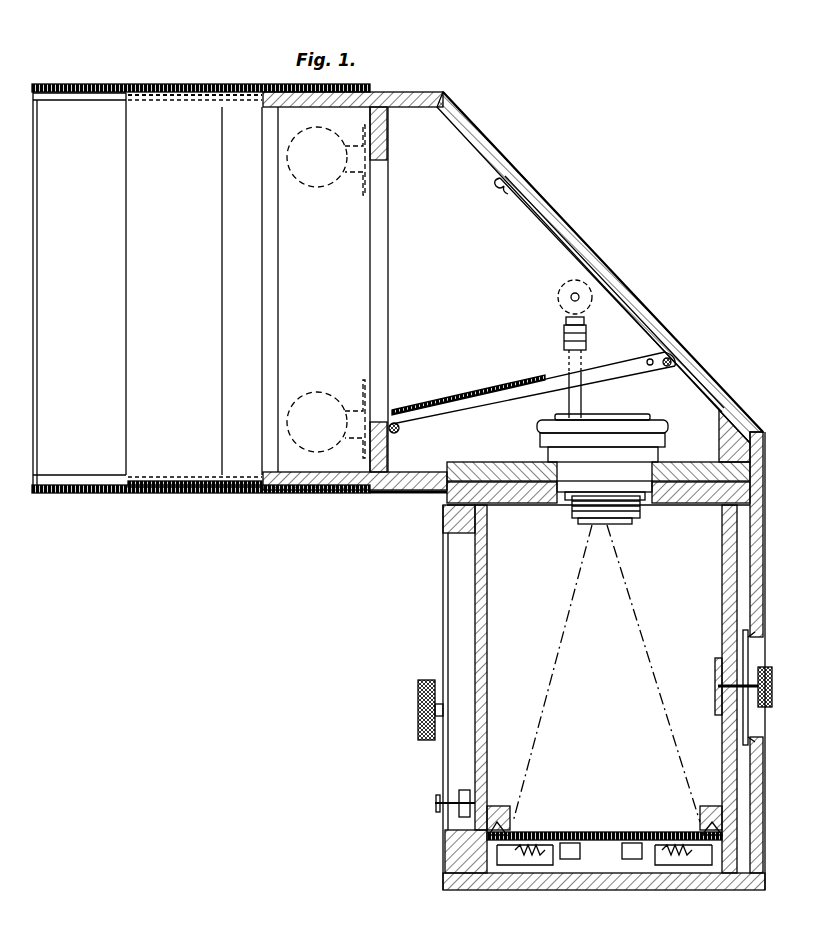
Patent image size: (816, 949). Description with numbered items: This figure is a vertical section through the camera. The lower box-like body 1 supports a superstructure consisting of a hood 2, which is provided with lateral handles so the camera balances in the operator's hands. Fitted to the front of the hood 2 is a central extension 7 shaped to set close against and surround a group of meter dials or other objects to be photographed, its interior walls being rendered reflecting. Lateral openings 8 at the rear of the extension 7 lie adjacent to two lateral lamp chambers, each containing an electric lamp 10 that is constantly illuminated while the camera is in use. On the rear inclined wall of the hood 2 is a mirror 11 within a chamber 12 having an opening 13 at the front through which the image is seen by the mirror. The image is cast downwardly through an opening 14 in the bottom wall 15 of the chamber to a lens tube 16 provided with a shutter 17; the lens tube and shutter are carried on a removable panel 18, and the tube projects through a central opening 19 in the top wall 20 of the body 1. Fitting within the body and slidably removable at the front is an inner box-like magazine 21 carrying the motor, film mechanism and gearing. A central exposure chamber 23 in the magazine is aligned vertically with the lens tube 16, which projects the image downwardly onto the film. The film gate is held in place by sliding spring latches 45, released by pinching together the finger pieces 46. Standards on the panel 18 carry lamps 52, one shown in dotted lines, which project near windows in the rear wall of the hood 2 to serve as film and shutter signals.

The body 1 is at (757, 552).
The hood 2 is at (598, 270).
The central extension 7 is at (126, 360).
The lateral openings 8 is at (221, 359).
The electric lamp 10 is at (321, 189).
The mirror 11 is at (548, 236).
The chamber 12 is at (405, 313).
The opening 13 is at (386, 270).
The opening 14 is at (547, 378).
The bottom wall 15 is at (457, 394).
The lens tube 16 is at (583, 520).
The shutter 17 is at (540, 436).
The removable panel 18 is at (467, 466).
The central opening 19 is at (566, 496).
The top wall 20 is at (520, 500).
The magazine 21 is at (487, 638).
The exposure chamber 23 is at (612, 689).
The sliding spring latches 45 is at (552, 848).
The finger pieces 46 is at (630, 858).
The lamps 52 is at (560, 288).